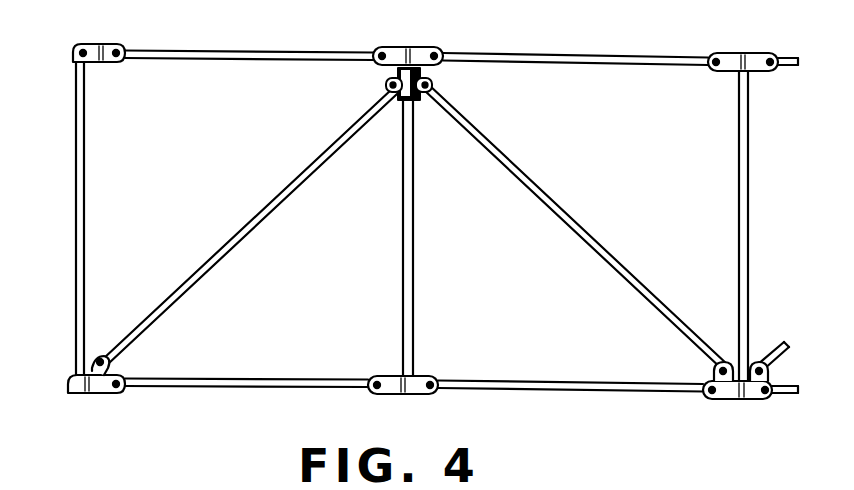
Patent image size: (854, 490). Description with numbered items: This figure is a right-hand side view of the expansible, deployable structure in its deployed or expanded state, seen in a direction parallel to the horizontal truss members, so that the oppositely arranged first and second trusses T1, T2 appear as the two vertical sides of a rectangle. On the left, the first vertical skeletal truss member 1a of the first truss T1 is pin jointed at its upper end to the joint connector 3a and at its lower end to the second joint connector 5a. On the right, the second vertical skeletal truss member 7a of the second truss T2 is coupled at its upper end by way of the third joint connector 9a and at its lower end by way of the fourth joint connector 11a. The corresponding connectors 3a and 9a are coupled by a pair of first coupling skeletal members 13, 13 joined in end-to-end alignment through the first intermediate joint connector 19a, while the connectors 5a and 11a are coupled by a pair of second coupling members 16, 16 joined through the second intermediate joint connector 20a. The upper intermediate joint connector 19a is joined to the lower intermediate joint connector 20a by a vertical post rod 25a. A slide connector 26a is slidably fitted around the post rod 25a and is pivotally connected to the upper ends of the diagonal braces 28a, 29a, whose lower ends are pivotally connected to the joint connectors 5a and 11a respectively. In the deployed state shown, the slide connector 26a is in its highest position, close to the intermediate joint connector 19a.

The first vertical skeletal truss member 1a is at (76, 292).
The joint connector 3a is at (102, 14).
The second joint connector 5a is at (91, 393).
The second vertical skeletal truss member 7a is at (748, 300).
The third joint connector 9a is at (730, 53).
The fourth joint connector 11a is at (740, 399).
The first coupling skeletal member 13 is at (263, 58).
The second coupling member 16 is at (201, 390).
The first intermediate joint connector 19a is at (400, 47).
The second intermediate joint connector 20a is at (430, 376).
The vertical post rod 25a is at (414, 290).
The slide connector 26a is at (398, 100).
The diagonal brace 28a is at (200, 258).
The diagonal brace 29a is at (605, 252).
The first truss T1 is at (76, 193).
The second truss T2 is at (749, 195).